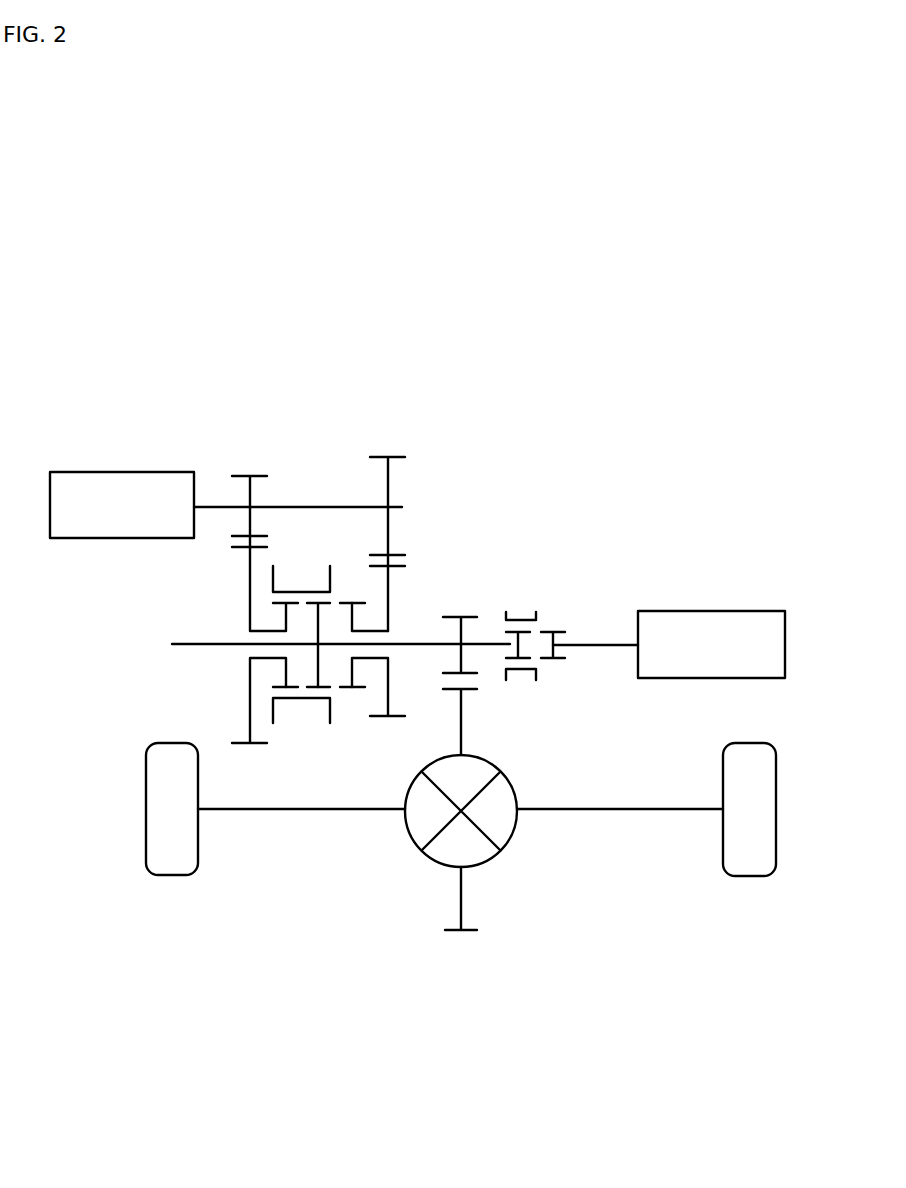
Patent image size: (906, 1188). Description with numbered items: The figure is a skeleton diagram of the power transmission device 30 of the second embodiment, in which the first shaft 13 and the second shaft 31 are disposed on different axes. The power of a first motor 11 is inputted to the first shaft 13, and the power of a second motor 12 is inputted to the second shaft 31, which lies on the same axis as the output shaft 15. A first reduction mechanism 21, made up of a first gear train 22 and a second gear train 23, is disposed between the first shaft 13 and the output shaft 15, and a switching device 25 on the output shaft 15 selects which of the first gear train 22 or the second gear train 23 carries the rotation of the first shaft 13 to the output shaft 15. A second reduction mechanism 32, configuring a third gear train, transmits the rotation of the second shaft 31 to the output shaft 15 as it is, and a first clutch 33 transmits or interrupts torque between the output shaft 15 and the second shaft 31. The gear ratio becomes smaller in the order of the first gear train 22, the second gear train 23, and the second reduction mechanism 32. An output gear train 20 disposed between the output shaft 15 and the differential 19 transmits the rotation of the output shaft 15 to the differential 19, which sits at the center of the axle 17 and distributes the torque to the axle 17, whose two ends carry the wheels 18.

The first motor 11 is at (127, 485).
The second motor 12 is at (722, 625).
The first shaft 13 is at (224, 507).
The output shaft 15 is at (190, 643).
The axle 17 is at (323, 811).
The wheels 18 is at (173, 862).
The differential 19 is at (500, 826).
The output gear train 20 is at (468, 948).
The first reduction mechanism 21 is at (327, 476).
The first gear train 22 is at (262, 443).
The second gear train 23 is at (393, 497).
The switching device 25 is at (308, 716).
The power transmission device 30 is at (629, 322).
The second shaft 31 is at (602, 640).
The second reduction mechanism 32 is at (560, 622).
The first clutch 33 is at (542, 653).